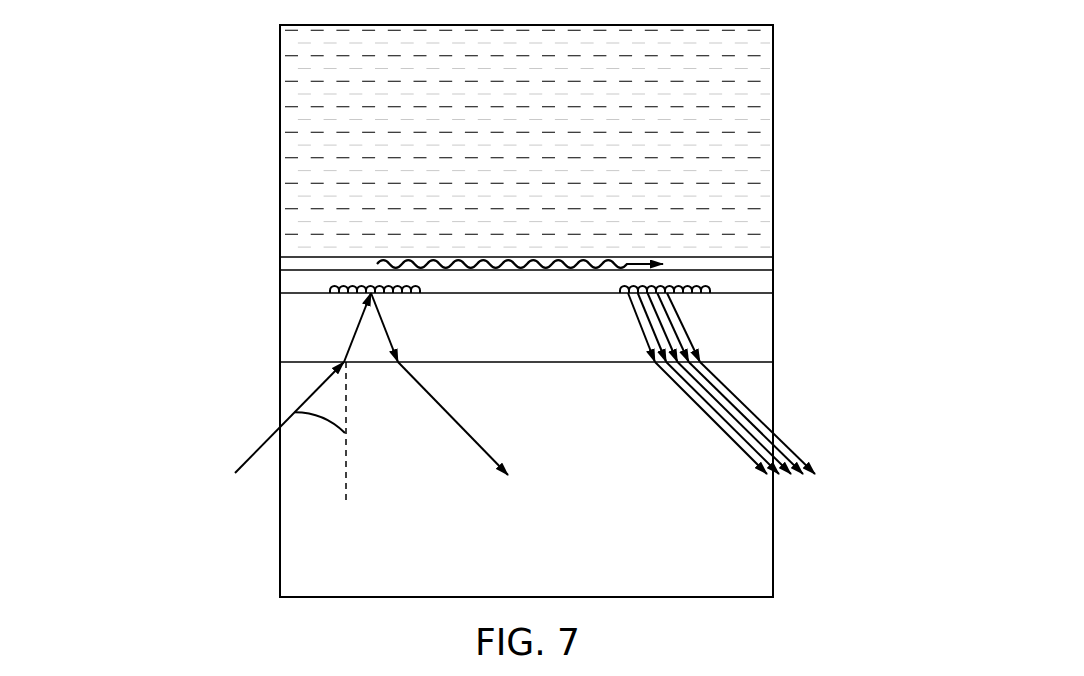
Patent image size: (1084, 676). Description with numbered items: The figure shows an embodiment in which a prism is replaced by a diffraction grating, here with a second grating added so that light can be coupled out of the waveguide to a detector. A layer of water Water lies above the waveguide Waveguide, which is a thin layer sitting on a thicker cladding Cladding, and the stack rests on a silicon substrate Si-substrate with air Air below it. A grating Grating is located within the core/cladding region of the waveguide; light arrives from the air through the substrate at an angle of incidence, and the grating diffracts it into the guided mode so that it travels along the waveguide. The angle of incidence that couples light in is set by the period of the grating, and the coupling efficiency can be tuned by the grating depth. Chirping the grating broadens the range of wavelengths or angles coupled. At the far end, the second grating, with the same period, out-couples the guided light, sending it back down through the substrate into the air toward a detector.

The water Water is at (322, 97).
The waveguide Waveguide is at (440, 258).
The diffraction grating Grating is at (324, 284).
The cladding Cladding is at (724, 283).
The Si substrate Si-substrate is at (526, 327).
The air Air is at (525, 448).